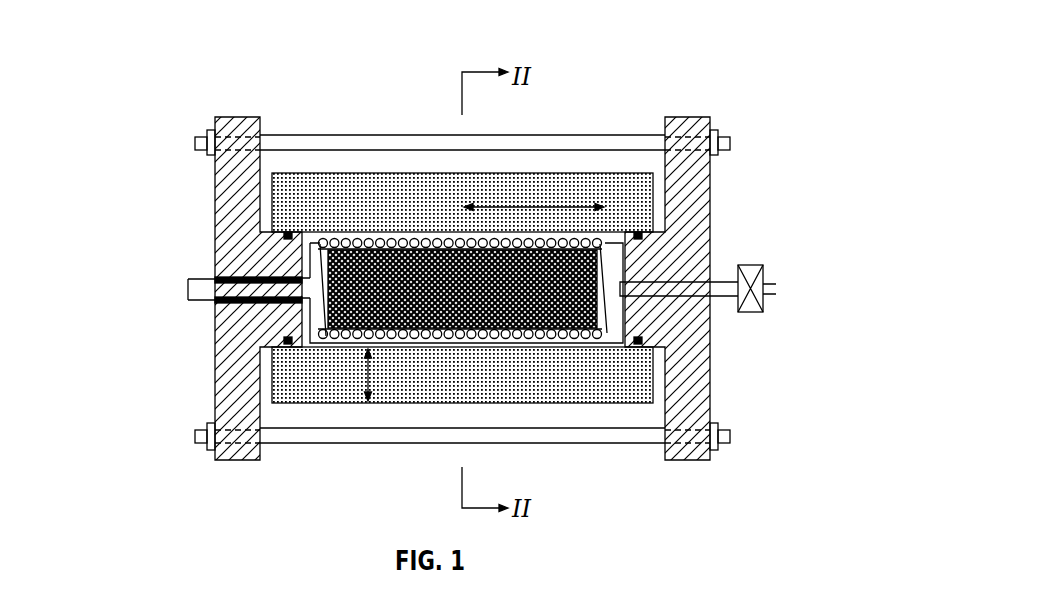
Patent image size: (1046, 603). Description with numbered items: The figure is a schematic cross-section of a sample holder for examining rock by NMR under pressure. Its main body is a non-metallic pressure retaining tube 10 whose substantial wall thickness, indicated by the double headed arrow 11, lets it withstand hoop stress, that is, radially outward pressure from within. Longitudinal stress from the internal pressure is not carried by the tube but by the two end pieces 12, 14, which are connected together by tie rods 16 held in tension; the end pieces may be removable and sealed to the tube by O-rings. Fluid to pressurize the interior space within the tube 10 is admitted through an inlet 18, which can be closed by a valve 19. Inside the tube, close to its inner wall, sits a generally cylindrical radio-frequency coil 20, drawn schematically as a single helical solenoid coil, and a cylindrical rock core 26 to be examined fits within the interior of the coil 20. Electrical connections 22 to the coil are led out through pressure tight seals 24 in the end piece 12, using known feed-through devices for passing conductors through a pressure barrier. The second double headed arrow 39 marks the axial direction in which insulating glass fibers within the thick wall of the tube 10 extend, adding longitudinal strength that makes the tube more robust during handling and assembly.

The pressure retaining tube 10 is at (557, 477).
The double headed arrow 11 is at (368, 375).
The end piece 12 is at (233, 213).
The end piece 14 is at (693, 187).
The tie rod 16 is at (602, 143).
The inlet 18 is at (772, 293).
The valve 19 is at (748, 265).
The radio-frequency coil 20 is at (400, 235).
The electrical connections 22 is at (188, 300).
The pressure tight seals 24 is at (225, 277).
The rock core 26 is at (450, 312).
The double headed arrow 39 is at (507, 205).